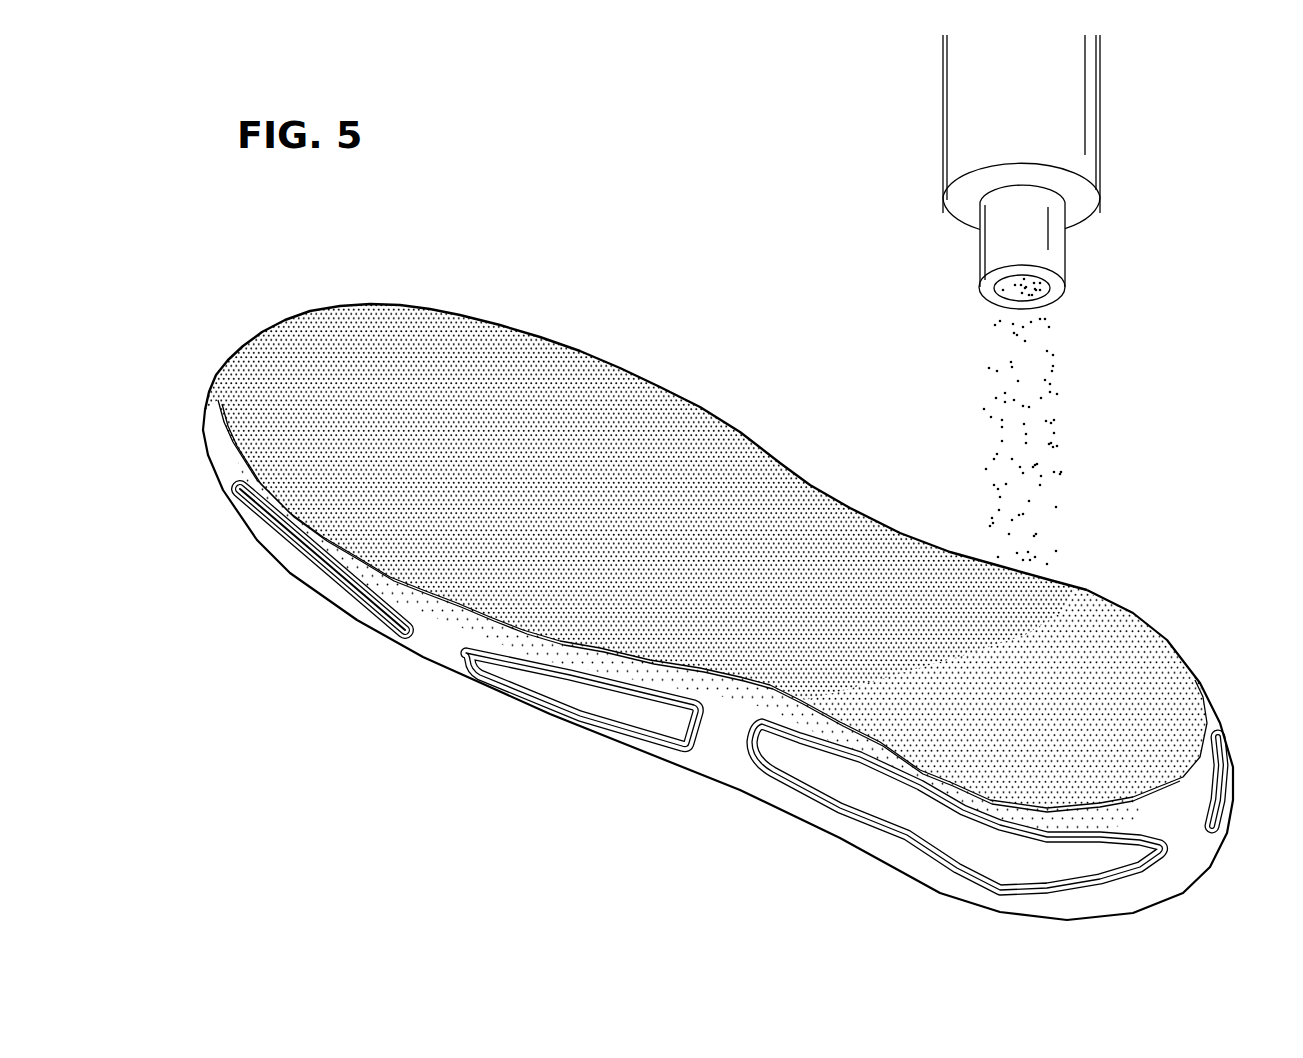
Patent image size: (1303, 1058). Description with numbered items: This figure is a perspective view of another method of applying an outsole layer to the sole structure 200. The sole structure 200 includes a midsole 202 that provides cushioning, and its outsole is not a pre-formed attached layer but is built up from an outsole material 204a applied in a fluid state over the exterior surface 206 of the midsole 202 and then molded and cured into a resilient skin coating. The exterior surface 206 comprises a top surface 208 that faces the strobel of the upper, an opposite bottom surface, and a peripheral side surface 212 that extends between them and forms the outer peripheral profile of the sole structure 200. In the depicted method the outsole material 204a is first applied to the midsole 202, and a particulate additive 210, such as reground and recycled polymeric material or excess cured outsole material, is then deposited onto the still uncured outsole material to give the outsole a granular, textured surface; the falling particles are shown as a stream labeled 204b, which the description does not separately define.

The sole structure 200 is at (739, 571).
The midsole 202 is at (718, 673).
The outsole material 204a is at (1129, 680).
The falling particulate material 204b is at (1038, 358).
The exterior surface 206 is at (718, 673).
The top surface 208 is at (920, 928).
The particulate additive 210 is at (907, 733).
The peripheral side surface 212 is at (883, 818).